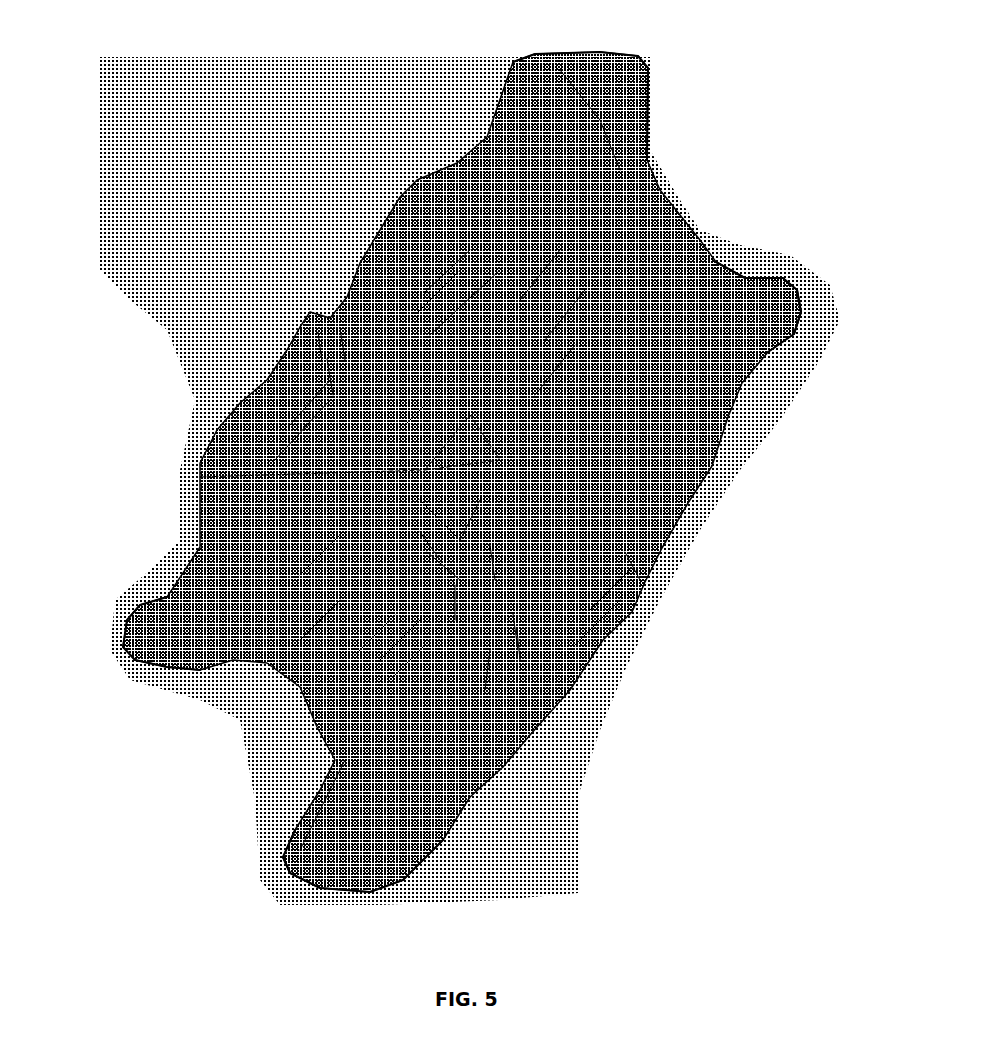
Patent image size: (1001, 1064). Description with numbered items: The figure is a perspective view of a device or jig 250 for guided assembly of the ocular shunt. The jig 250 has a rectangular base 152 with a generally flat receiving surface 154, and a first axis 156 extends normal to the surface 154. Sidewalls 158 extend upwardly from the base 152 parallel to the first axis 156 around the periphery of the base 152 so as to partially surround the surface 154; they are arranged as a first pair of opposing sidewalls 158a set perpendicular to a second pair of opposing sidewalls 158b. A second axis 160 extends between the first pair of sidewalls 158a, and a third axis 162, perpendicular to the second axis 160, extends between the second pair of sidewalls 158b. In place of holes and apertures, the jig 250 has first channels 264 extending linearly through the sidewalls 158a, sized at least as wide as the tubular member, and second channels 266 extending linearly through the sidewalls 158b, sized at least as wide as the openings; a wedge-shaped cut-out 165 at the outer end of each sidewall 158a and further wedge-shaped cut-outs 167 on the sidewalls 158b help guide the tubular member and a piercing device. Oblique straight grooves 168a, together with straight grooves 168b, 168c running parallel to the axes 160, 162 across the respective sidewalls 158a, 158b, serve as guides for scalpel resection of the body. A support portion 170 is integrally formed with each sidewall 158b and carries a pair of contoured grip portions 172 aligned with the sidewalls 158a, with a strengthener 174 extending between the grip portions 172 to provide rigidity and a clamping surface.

The jig 250 is at (285, 192).
The base 152 is at (427, 550).
The receiving surface 154 is at (420, 532).
The first axis 156 is at (200, 477).
The sidewalls 158 is at (435, 330).
The first pair of opposing sidewalls 158a is at (293, 423).
The second pair of opposing sidewalls 158b is at (420, 310).
The second axis 160 is at (400, 432).
The third axis 162 is at (420, 500).
The wedge-shaped cut-out 165 is at (318, 330).
The wedge-shaped cut-outs 167 is at (530, 325).
The straight grooves 168a is at (340, 325).
The straight grooves 168b is at (625, 550).
The straight grooves 168c is at (430, 288).
The support portion 170 is at (805, 298).
The contoured grip portions 172 is at (480, 148).
The strengthener 174 is at (580, 180).
The first channels 264 is at (327, 357).
The second channels 266 is at (540, 400).